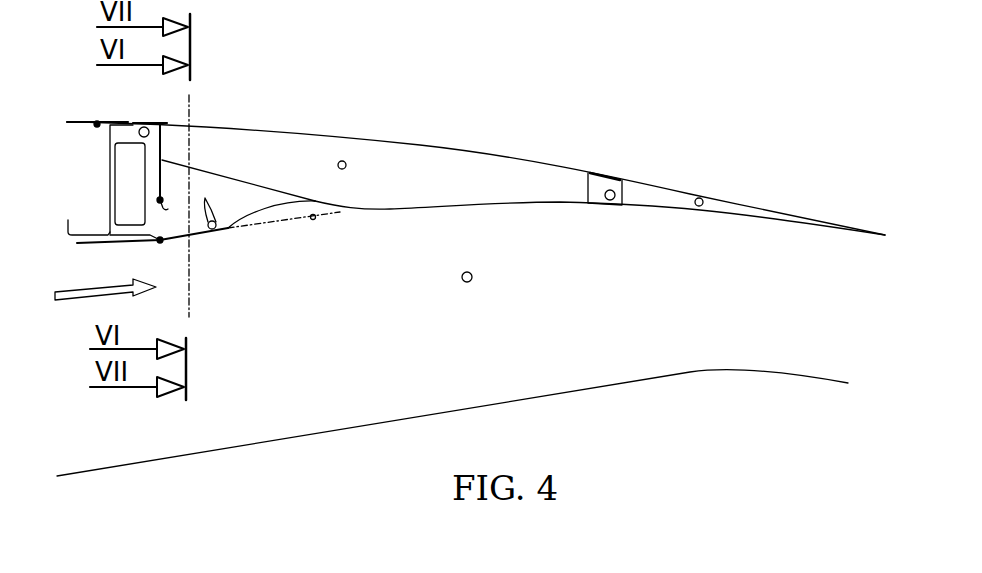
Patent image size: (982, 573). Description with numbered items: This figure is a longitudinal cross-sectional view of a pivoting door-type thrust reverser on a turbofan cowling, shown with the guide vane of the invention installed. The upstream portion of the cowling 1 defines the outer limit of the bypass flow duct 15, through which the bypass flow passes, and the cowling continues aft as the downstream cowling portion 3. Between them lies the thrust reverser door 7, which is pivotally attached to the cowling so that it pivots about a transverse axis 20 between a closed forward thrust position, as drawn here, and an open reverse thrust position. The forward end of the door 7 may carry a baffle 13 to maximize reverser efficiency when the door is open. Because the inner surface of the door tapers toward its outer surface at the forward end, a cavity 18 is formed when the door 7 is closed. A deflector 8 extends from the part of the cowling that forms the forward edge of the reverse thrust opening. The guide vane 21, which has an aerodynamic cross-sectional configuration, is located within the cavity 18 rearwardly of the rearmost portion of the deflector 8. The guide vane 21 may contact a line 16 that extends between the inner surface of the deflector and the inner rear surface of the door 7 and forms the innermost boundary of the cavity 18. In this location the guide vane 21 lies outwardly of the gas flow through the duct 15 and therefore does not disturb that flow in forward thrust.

The upstream portion of the cowling 1 is at (97, 122).
The downstream cowling portion 3 is at (699, 198).
The thrust reverser door 7 is at (342, 161).
The deflector 8 is at (160, 242).
The baffle 13 is at (158, 199).
The bypass flow duct 15 is at (727, 301).
The line 16 is at (314, 220).
The cavity 18 is at (224, 205).
The transverse axis 20 is at (468, 283).
The guide vane 21 is at (237, 226).